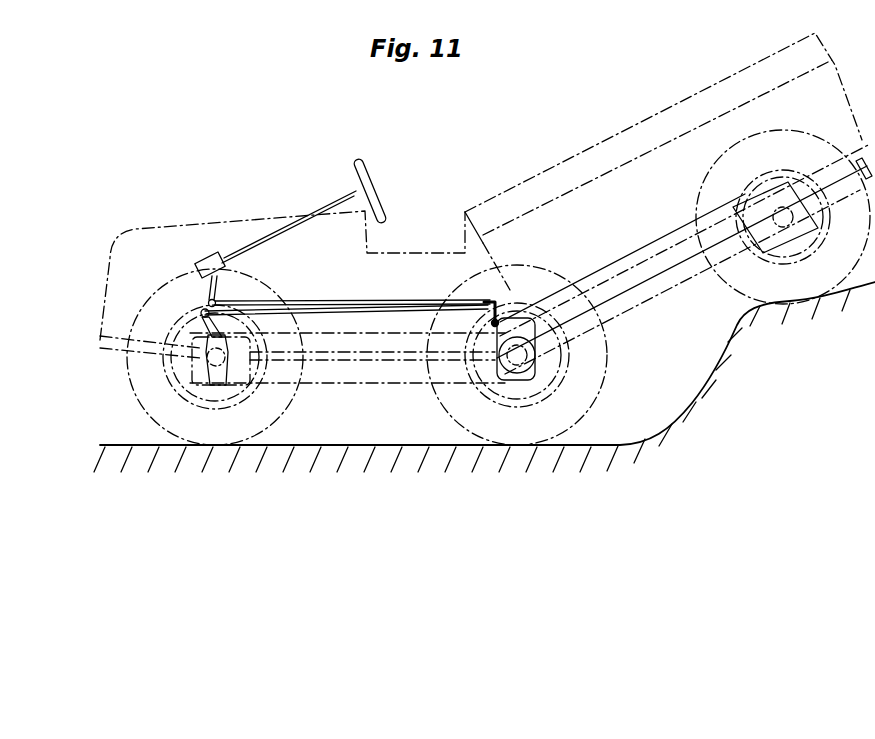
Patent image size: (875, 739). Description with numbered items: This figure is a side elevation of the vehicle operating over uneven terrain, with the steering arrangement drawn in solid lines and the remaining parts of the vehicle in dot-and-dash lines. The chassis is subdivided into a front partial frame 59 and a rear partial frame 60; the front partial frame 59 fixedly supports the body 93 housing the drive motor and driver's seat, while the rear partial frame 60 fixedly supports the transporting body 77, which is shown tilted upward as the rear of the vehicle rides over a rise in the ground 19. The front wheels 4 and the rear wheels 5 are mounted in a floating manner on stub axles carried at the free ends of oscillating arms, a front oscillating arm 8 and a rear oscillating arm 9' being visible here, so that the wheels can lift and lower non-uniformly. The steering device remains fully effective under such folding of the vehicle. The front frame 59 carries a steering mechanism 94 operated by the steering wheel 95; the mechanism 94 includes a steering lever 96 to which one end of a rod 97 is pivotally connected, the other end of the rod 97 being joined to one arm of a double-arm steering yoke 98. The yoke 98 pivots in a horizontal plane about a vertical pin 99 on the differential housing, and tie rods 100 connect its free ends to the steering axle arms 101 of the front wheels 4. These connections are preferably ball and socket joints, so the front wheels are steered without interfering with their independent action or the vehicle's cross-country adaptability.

The body 93 is at (155, 234).
The transporting body 77 is at (684, 112).
The front partial frame 59 is at (354, 360).
The front wheels 4 is at (158, 405).
The oscillatable arm 8 is at (417, 368).
The rear partial frame 60 is at (636, 292).
The oscillatable arm 9' is at (682, 282).
The rear wheels 5 is at (823, 286).
The ground 19 is at (520, 430).
The steering wheel 95 is at (370, 178).
The steering mechanism 94 is at (211, 259).
The steering lever 96 is at (224, 284).
The rod 97 is at (313, 302).
The tie rods 100 is at (339, 309).
The steering axle arms 101 is at (200, 316).
The vertical pin 99 is at (483, 298).
The double-arm steering yoke 98 is at (492, 300).